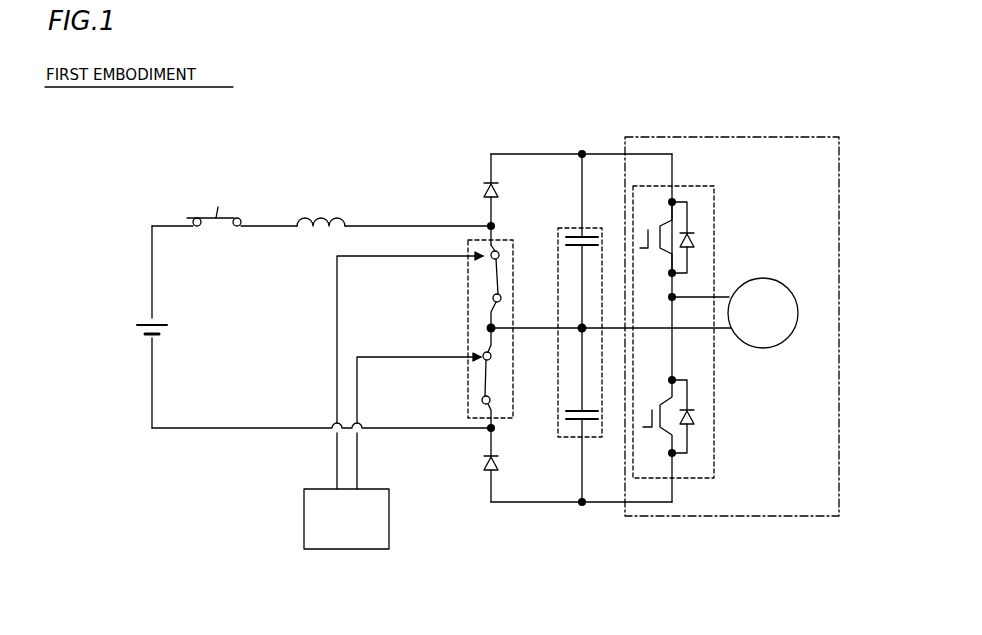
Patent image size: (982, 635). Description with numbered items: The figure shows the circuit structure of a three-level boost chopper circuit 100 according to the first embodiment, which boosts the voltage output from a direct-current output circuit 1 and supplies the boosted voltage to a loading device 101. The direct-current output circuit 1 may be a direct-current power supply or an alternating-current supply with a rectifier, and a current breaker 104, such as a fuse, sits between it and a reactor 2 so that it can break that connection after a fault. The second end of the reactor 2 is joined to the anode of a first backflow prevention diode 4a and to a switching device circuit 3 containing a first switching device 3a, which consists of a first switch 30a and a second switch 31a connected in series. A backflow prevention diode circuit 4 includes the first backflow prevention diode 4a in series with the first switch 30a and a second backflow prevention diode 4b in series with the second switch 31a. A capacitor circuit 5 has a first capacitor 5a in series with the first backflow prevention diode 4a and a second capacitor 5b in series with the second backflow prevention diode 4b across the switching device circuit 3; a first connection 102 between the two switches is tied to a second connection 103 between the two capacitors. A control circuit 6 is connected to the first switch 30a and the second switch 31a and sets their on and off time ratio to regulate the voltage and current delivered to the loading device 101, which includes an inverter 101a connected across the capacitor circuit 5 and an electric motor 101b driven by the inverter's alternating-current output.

The boost chopper circuit 100 is at (128, 168).
The direct-current output circuit 1 is at (146, 320).
The current breaker 104 is at (212, 214).
The reactor 2 is at (298, 222).
The switching device circuit 3 is at (478, 238).
The first switching device 3a is at (449, 316).
The first switch 30a is at (496, 278).
The second switch 31a is at (485, 380).
The backflow prevention diode circuit 4 is at (443, 324).
The first backflow prevention diode 4a is at (482, 190).
The second backflow prevention diode 4b is at (482, 463).
The capacitor circuit 5 is at (591, 226).
The first capacitor 5a is at (575, 236).
The second capacitor 5b is at (575, 425).
The first connection 102 is at (486, 328).
The second connection 103 is at (578, 324).
The loading device 101 is at (722, 135).
The inverter 101a is at (714, 206).
The electric motor 101b is at (768, 278).
The control circuit 6 is at (304, 513).